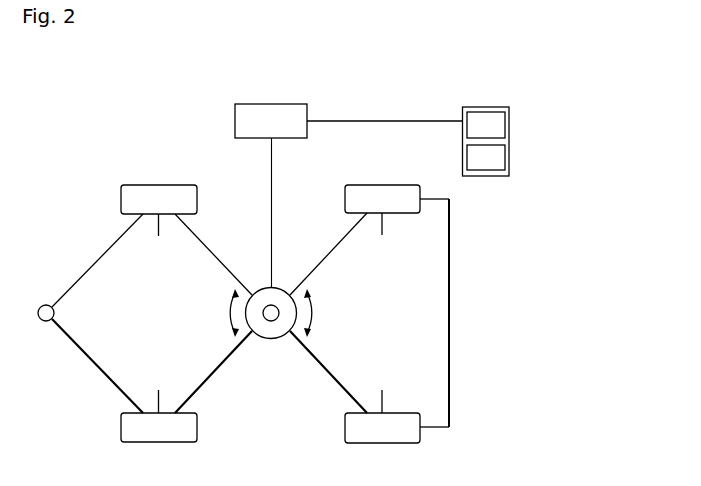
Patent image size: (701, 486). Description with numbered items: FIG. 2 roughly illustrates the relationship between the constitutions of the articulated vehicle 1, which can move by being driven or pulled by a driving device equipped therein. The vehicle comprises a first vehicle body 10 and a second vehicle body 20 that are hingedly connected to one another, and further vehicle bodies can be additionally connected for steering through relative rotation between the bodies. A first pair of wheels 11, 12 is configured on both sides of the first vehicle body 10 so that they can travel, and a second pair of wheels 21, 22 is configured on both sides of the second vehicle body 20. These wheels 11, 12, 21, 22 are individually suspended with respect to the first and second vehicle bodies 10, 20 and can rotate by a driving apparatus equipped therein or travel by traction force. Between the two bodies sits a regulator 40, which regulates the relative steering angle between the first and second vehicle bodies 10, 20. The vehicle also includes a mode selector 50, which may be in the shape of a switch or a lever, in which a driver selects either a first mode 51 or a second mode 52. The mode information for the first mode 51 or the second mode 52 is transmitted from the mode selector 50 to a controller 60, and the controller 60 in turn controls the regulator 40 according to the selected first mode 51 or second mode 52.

The articulated vehicle 1 is at (102, 145).
The first vehicle body 10 is at (433, 322).
The first wheel 11 is at (384, 192).
The first wheel 12 is at (402, 432).
The second vehicle body 20 is at (97, 287).
The second wheel 21 is at (143, 185).
The second wheel 22 is at (133, 430).
The regulator 40 is at (272, 332).
The mode selector 50 is at (485, 107).
The first mode 51 is at (510, 124).
The second mode 52 is at (510, 155).
The controller 60 is at (272, 104).